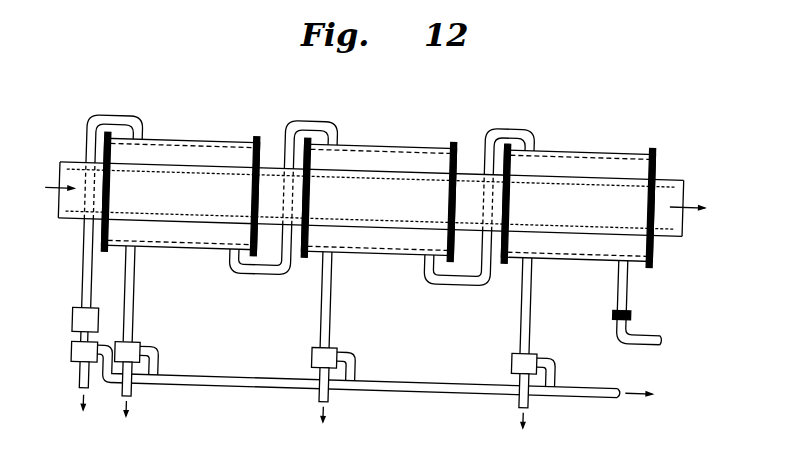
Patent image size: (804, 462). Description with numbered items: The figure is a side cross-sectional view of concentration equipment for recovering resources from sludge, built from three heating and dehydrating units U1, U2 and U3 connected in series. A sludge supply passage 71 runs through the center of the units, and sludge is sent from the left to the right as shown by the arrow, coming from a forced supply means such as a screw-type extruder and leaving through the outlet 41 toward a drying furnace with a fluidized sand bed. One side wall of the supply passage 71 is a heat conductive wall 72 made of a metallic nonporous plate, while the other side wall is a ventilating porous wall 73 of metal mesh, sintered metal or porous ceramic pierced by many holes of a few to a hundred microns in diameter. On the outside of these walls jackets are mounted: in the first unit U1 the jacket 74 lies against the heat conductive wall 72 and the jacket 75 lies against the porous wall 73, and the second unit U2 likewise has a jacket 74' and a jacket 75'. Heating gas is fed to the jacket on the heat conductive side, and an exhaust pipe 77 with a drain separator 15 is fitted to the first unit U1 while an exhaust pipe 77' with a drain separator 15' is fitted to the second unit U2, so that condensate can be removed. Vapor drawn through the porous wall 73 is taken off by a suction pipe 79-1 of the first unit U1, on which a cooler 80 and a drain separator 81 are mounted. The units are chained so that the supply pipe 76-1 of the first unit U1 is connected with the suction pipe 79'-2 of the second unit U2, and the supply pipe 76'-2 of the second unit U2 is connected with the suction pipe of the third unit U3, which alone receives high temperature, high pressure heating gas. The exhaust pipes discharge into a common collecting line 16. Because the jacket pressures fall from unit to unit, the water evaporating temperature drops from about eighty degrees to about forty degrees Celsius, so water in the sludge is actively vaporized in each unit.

The sludge supply passage 71 is at (72, 180).
The ventilating porous wall 73 is at (173, 177).
The heat conductive wall 72 is at (238, 223).
The outlet pipe 41 is at (667, 177).
The first heating and dehydrating unit U1 is at (181, 192).
The second heating and dehydrating unit U2 is at (378, 201).
The third heating and dehydrating unit U3 is at (578, 210).
The jacket 75 is at (183, 115).
The jacket 75' is at (380, 134).
The jacket 74 is at (178, 273).
The jacket 74' is at (376, 270).
The suction pipe 79-1 is at (115, 122).
The suction pipe 79'-2 is at (343, 156).
The supply pipe 76-1 is at (245, 280).
The supply pipe 76'-2 is at (456, 288).
The exhaust pipe 77 is at (154, 295).
The exhaust pipe 77' is at (355, 301).
The drain separator 15 is at (155, 375).
The drain separator 15' is at (358, 378).
The cooler 80 is at (77, 320).
The drain separator 81 is at (77, 365).
The collecting manifold 16 is at (610, 382).